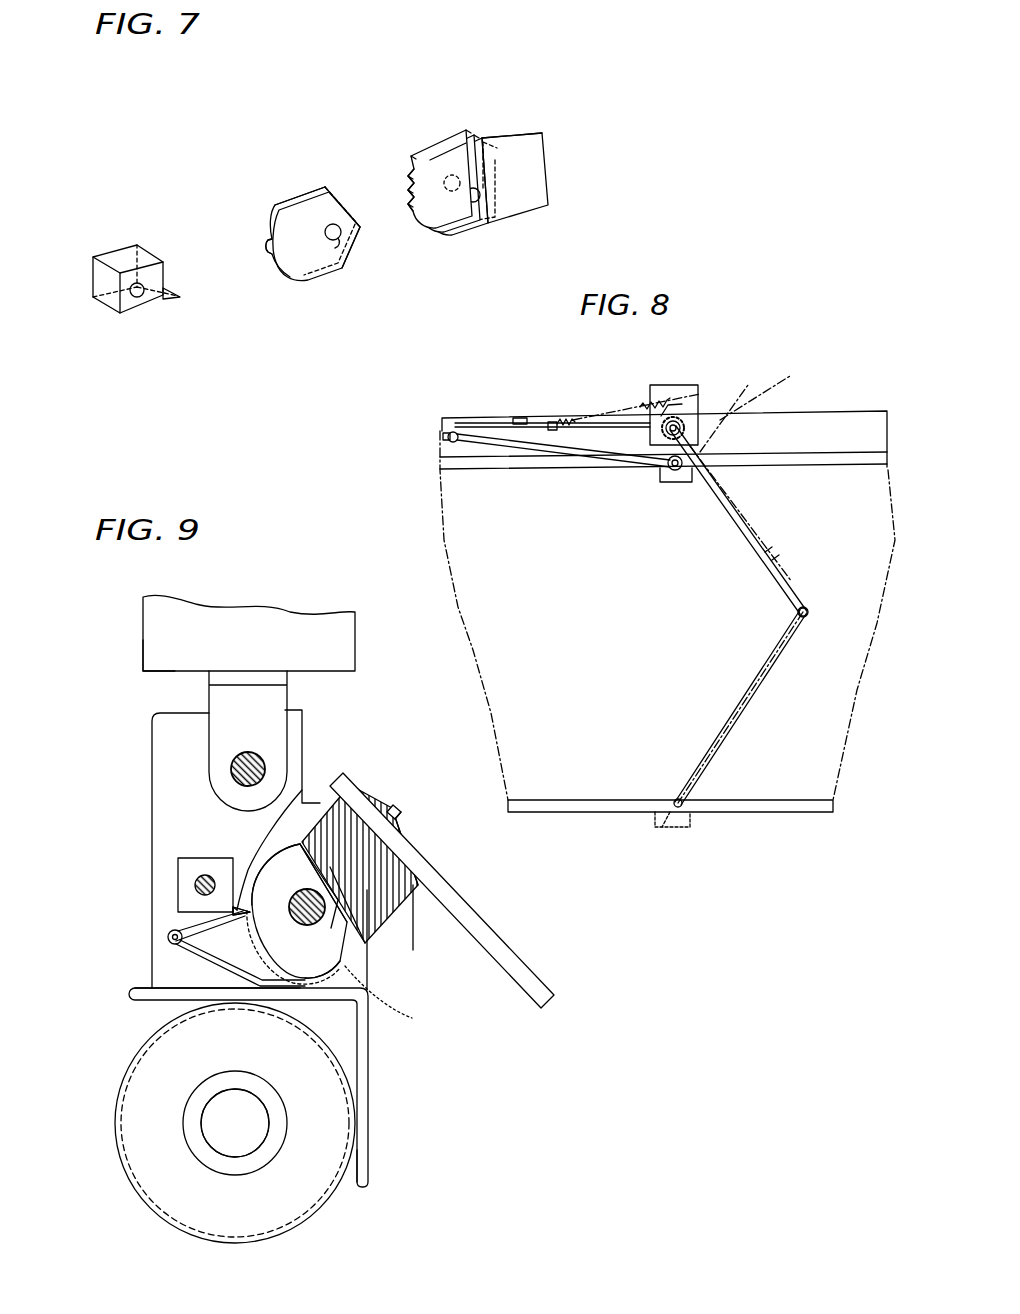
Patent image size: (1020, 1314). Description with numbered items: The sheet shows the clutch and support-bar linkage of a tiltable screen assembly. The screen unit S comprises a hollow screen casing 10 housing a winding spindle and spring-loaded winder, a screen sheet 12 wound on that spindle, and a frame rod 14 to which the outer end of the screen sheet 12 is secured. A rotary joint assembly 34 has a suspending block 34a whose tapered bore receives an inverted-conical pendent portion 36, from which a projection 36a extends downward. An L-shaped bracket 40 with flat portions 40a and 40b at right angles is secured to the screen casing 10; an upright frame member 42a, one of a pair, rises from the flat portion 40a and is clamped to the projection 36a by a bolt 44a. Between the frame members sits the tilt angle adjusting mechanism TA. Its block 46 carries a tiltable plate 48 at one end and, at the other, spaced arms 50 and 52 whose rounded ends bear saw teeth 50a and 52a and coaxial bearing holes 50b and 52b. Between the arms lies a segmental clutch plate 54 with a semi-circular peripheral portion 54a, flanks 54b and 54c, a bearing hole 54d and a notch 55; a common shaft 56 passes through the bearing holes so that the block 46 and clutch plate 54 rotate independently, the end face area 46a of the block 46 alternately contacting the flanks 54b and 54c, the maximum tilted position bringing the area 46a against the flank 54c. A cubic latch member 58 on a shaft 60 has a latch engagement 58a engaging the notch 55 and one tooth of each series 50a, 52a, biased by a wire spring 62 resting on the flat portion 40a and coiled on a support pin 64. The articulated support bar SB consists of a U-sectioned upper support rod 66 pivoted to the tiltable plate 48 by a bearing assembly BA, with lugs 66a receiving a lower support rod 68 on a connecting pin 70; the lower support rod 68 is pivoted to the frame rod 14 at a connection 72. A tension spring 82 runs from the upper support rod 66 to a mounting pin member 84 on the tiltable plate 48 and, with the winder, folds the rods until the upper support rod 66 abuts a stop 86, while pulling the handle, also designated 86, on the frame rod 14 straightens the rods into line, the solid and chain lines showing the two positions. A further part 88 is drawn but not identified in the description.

In FIG. 8, the screen casing 10 is at (826, 422).
In FIG. 9, the screen casing 10 is at (138, 1208).
In FIG. 8, the screen sheet 12 is at (585, 802).
In FIG. 8, the frame rod 14 is at (833, 463).
In FIG. 9, the rotary joint assembly 34 is at (163, 625).
In FIG. 9, the suspending block 34a is at (156, 651).
In FIG. 9, the projection 36a is at (220, 693).
In FIG. 9, the pendent portion 36 is at (307, 907).
In FIG. 9, the L-shaped bracket 40 is at (370, 1089).
In FIG. 9, the flat portion 40a is at (134, 993).
In FIG. 9, the flat portion 40b is at (368, 1171).
In FIG. 9, the upright frame member 42a is at (173, 730).
In FIG. 9, the bolt 44a is at (232, 767).
In FIG. 7, the block 46 is at (531, 166).
In FIG. 9, the block 46 is at (336, 830).
In FIG. 7, the end face area 46a is at (513, 121).
In FIG. 9, the end face area 46a is at (418, 878).
In FIG. 8, the tiltable plate 48 is at (747, 390).
In FIG. 9, the tiltable plate 48 is at (341, 778).
In FIG. 7, the arm 50 is at (414, 155).
In FIG. 9, the arm 50 is at (412, 938).
In FIG. 7, the saw teeth 50a is at (401, 172).
In FIG. 9, the saw teeth 50a is at (393, 1005).
In FIG. 7, the bearing hole 50b is at (452, 175).
In FIG. 7, the arm 52 is at (437, 172).
In FIG. 7, the saw teeth 52a is at (414, 233).
In FIG. 7, the bearing hole 52b is at (477, 201).
In FIG. 7, the clutch plate 54 is at (305, 272).
In FIG. 9, the clutch plate 54 is at (290, 981).
In FIG. 7, the semi-circular peripheral portion 54a is at (276, 209).
In FIG. 9, the semi-circular peripheral portion 54a is at (263, 974).
In FIG. 7, the peripheral flank 54b is at (339, 248).
In FIG. 9, the peripheral flank 54b is at (343, 960).
In FIG. 7, the peripheral flank 54c is at (345, 195).
In FIG. 9, the peripheral flank 54c is at (350, 916).
In FIG. 7, the bearing hole 54d is at (339, 240).
In FIG. 7, the notch 55 is at (267, 246).
In FIG. 9, the notch 55 is at (238, 913).
In FIG. 9, the common shaft 56 is at (396, 808).
In FIG. 7, the latch member 58 is at (127, 253).
In FIG. 9, the latch member 58 is at (187, 897).
In FIG. 7, the latch engagement 58a is at (173, 298).
In FIG. 9, the latch engagement 58a is at (244, 900).
In FIG. 9, the shaft 60 is at (198, 880).
In FIG. 9, the wire spring 62 is at (197, 957).
In FIG. 9, the support pin 64 is at (168, 937).
In FIG. 8, the upper support rod 66 is at (620, 455).
In FIG. 8, the lugs 66a is at (456, 443).
In FIG. 8, the lower support rod 68 is at (572, 445).
In FIG. 8, the connecting pin 70 is at (448, 437).
In FIG. 8, the pivotal connection 72 is at (694, 472).
In FIG. 8, the tension spring 82 is at (616, 410).
In FIG. 8, the mounting pin member 84 is at (690, 400).
In FIG. 9, the mounting pin member 84 is at (399, 815).
In FIG. 8, the stop 86 is at (676, 483).
In FIG. 8, the stopper 88 is at (520, 418).
In FIG. 8, the bearing assembly BA is at (669, 416).
In FIG. 8, the articulated support bar SB is at (550, 431).
In FIG. 7, the tilt angle adjusting mechanism TA is at (474, 112).
In FIG. 9, the tilt angle adjusting mechanism TA is at (223, 838).
In FIG. 9, the screen unit S is at (215, 1212).